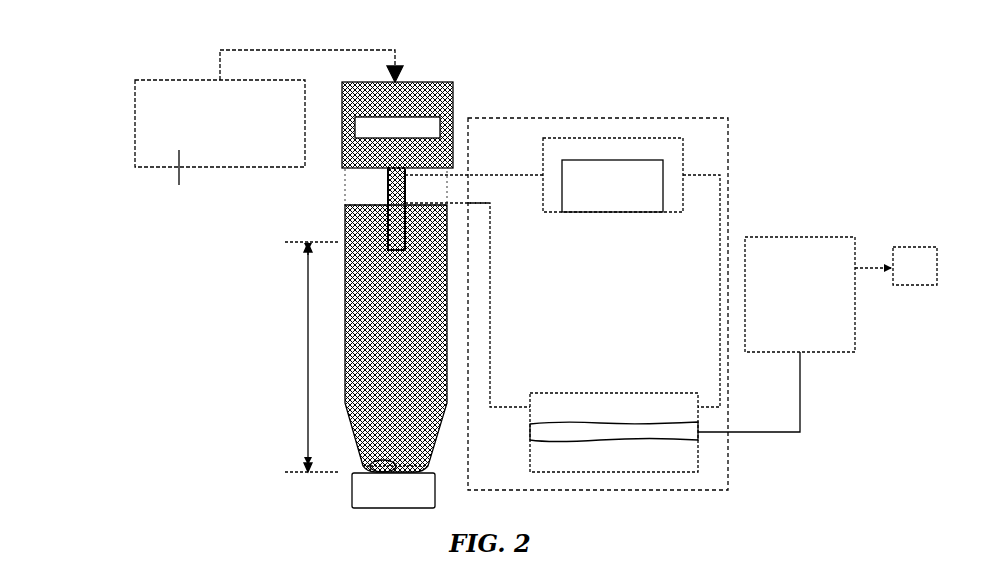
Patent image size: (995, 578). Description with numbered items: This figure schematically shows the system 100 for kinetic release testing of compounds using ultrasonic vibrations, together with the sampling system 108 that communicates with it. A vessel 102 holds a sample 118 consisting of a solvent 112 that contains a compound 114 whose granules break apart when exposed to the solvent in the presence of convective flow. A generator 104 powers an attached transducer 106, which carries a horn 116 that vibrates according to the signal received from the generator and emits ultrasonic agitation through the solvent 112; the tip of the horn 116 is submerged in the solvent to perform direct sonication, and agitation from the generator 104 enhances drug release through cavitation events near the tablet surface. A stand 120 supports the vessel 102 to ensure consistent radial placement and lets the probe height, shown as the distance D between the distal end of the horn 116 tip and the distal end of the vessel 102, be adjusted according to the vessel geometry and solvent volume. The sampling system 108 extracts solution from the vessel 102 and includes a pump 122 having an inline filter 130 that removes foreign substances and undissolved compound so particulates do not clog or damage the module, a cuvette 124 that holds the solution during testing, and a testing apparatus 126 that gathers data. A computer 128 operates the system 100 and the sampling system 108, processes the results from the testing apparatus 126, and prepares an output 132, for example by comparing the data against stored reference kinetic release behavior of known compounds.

The system 100 is at (100, 70).
The vessel 102 is at (427, 412).
The generator 104 is at (269, 131).
The transducer 106 is at (430, 98).
The sampling system 108 is at (760, 133).
The solvent 112 is at (345, 297).
The compound 114 is at (378, 463).
The horn 116 is at (388, 180).
The sample 118 is at (420, 460).
The stand 120 is at (352, 493).
The pump 122 is at (640, 148).
The cuvette 124 is at (637, 427).
The testing apparatus 126 is at (638, 455).
The computer 128 is at (838, 322).
The inline filter 130 is at (600, 197).
The output 132 is at (908, 254).
The distance D is at (312, 357).